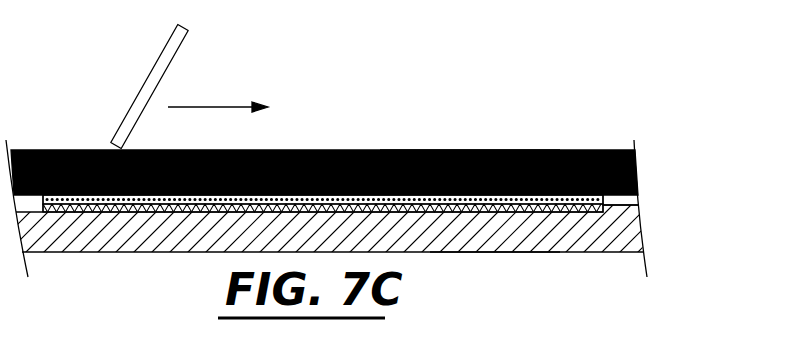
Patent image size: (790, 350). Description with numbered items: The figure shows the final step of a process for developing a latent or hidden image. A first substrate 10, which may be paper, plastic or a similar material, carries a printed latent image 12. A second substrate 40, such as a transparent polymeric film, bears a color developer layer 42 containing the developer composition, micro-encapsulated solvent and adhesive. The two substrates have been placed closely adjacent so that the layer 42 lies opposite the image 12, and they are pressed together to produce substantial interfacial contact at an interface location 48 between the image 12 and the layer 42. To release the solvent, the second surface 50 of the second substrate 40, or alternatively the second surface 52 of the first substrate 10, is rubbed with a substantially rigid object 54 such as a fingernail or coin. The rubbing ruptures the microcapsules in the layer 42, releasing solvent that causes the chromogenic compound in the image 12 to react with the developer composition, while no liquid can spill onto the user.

The substrate 10 is at (552, 230).
The latent image 12 is at (592, 208).
The second substrate 40 is at (562, 149).
The color developer layer 42 is at (628, 150).
The interface location 48 is at (603, 202).
The second surface of the second substrate 50 is at (479, 142).
The second surface of the first substrate 52 is at (492, 260).
The substantially rigid object 54 is at (148, 77).